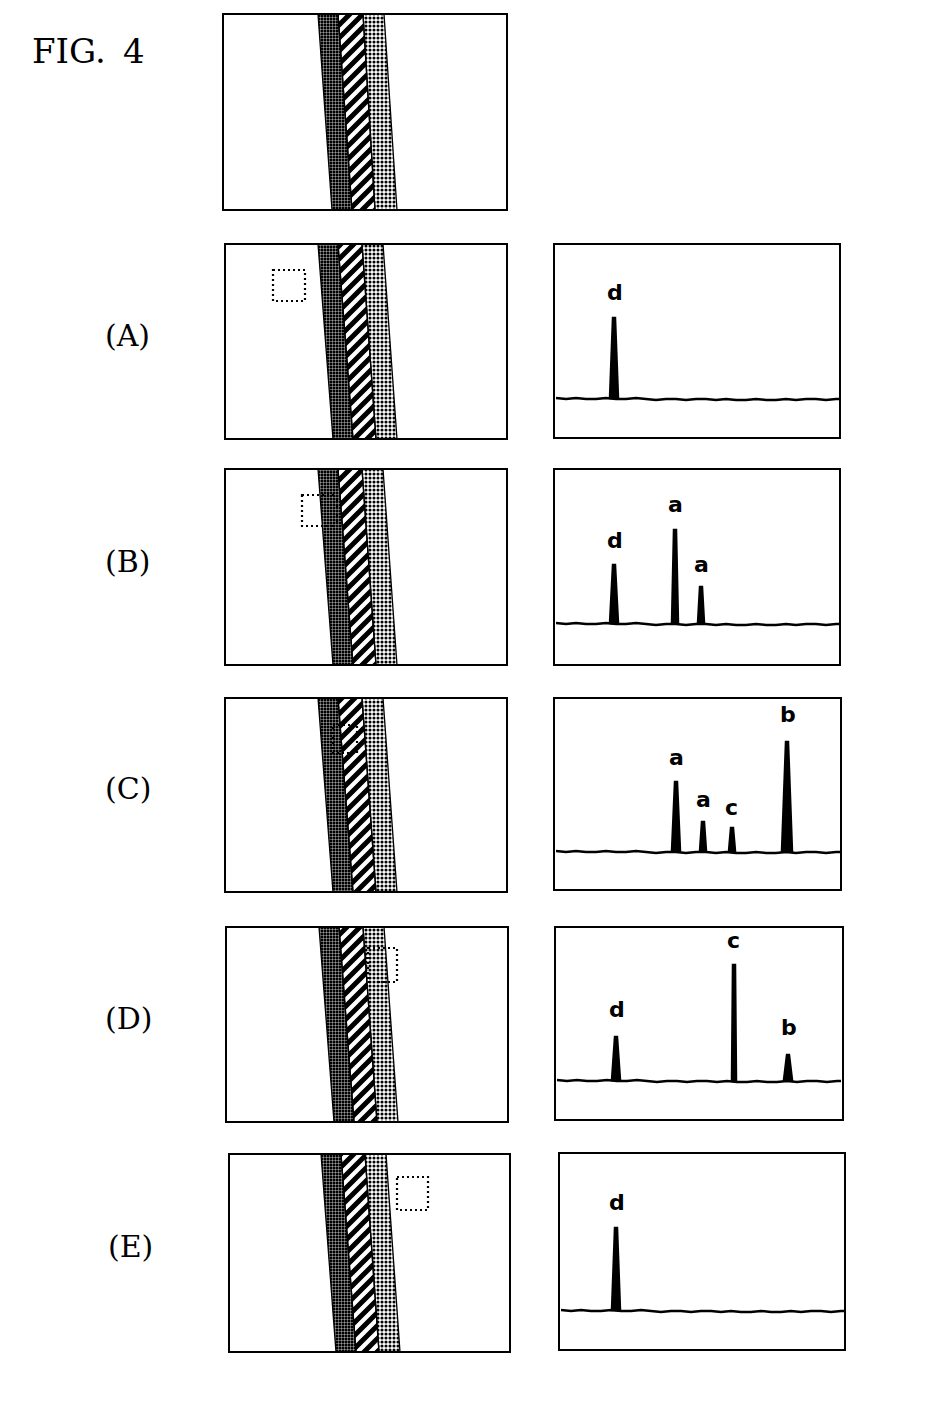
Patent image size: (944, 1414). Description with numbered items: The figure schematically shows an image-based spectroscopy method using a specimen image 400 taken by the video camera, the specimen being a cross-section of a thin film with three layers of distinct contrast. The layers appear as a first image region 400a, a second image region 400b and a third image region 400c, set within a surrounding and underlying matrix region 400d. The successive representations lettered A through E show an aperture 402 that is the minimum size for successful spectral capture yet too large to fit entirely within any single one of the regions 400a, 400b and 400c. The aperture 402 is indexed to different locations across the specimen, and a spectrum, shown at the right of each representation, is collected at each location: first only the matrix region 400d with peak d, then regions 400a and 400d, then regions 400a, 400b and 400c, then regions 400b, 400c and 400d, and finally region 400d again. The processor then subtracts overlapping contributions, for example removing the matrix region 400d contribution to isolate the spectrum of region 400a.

The specimen image 400 is at (223, 108).
The first image region 400a is at (335, 142).
The second image region 400b is at (353, 97).
The third image region 400c is at (380, 138).
The matrix region 400d is at (472, 180).
The aperture 402 is at (275, 290).